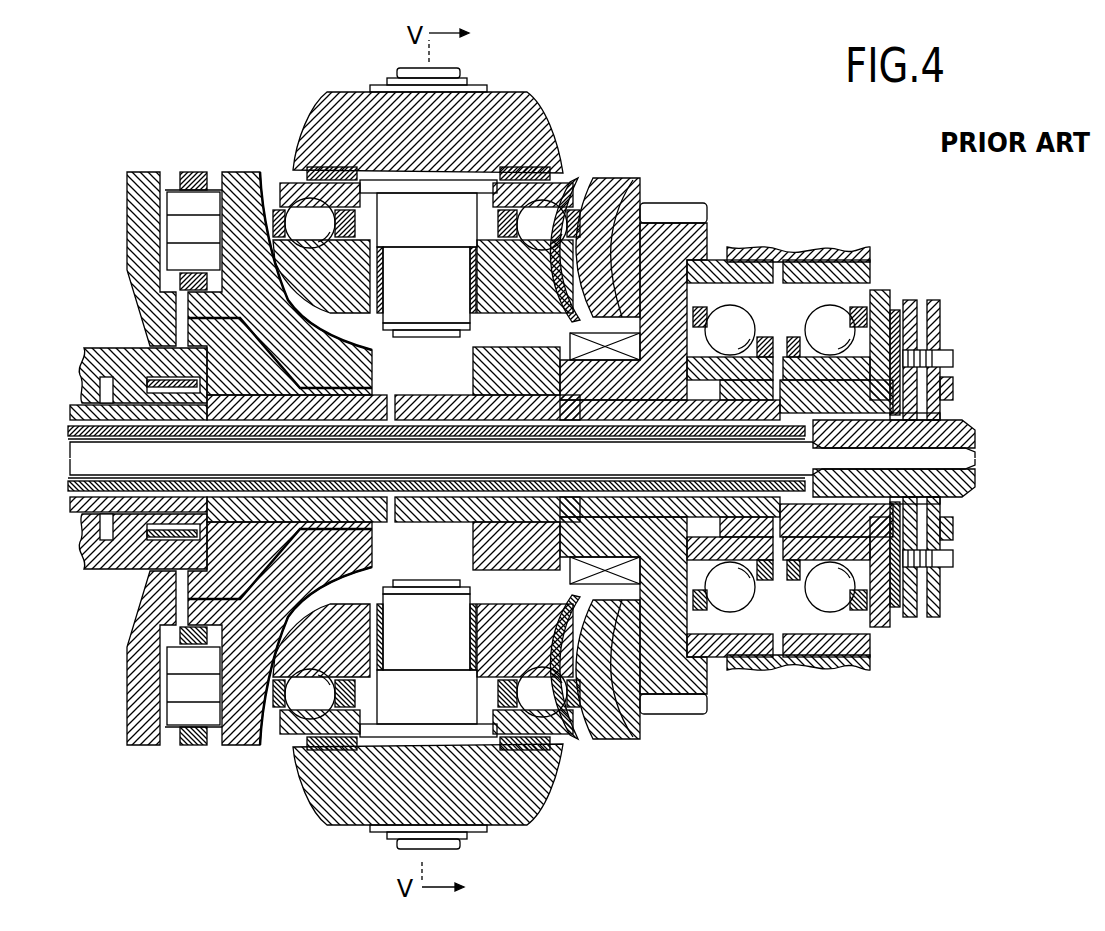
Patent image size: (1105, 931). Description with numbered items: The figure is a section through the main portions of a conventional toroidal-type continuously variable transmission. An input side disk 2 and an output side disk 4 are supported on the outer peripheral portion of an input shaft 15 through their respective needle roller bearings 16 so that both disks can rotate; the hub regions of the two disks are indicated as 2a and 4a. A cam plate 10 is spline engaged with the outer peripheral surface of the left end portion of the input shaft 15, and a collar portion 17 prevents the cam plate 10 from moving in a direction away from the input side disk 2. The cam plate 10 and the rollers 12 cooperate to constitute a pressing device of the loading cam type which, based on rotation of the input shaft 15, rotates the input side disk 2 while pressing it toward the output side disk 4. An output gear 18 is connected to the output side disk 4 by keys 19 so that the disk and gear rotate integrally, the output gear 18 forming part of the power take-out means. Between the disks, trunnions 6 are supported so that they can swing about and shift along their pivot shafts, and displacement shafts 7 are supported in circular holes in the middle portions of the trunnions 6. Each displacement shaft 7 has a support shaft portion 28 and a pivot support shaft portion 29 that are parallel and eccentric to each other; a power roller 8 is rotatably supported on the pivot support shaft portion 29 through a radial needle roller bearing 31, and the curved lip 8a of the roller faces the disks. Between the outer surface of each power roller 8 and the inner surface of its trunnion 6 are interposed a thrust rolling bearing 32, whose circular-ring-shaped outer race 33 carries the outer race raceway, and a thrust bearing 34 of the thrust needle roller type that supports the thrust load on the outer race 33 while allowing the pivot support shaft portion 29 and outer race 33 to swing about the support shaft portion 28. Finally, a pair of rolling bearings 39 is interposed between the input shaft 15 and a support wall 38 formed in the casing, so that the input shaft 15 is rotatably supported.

The input side disk 2 is at (232, 176).
The hub portion of flywheel 2a is at (383, 494).
The output side disk 4 is at (637, 204).
The hub portion of rotor 4a is at (462, 494).
The trunnion 6 is at (527, 108).
The displacement shaft 7 is at (452, 207).
The power roller 8 is at (598, 262).
The curved lip of clutch plate 8a is at (626, 210).
The cam plate 10 is at (138, 182).
The roller 12 is at (172, 210).
The input shaft 15 is at (965, 428).
The needle roller bearing 16 is at (326, 393).
The collar portion 17 is at (125, 335).
The output gear 18 is at (708, 214).
The key 19 is at (606, 362).
The support shaft portion 28 is at (400, 78).
The pivot support shaft portion 29 is at (446, 300).
The radial needle roller bearing 31 is at (383, 287).
The thrust rolling bearing 32 is at (269, 163).
The outer race 33 is at (567, 255).
The thrust bearing 34 is at (327, 175).
The support wall 38 is at (783, 670).
The rolling bearing 39 is at (733, 603).